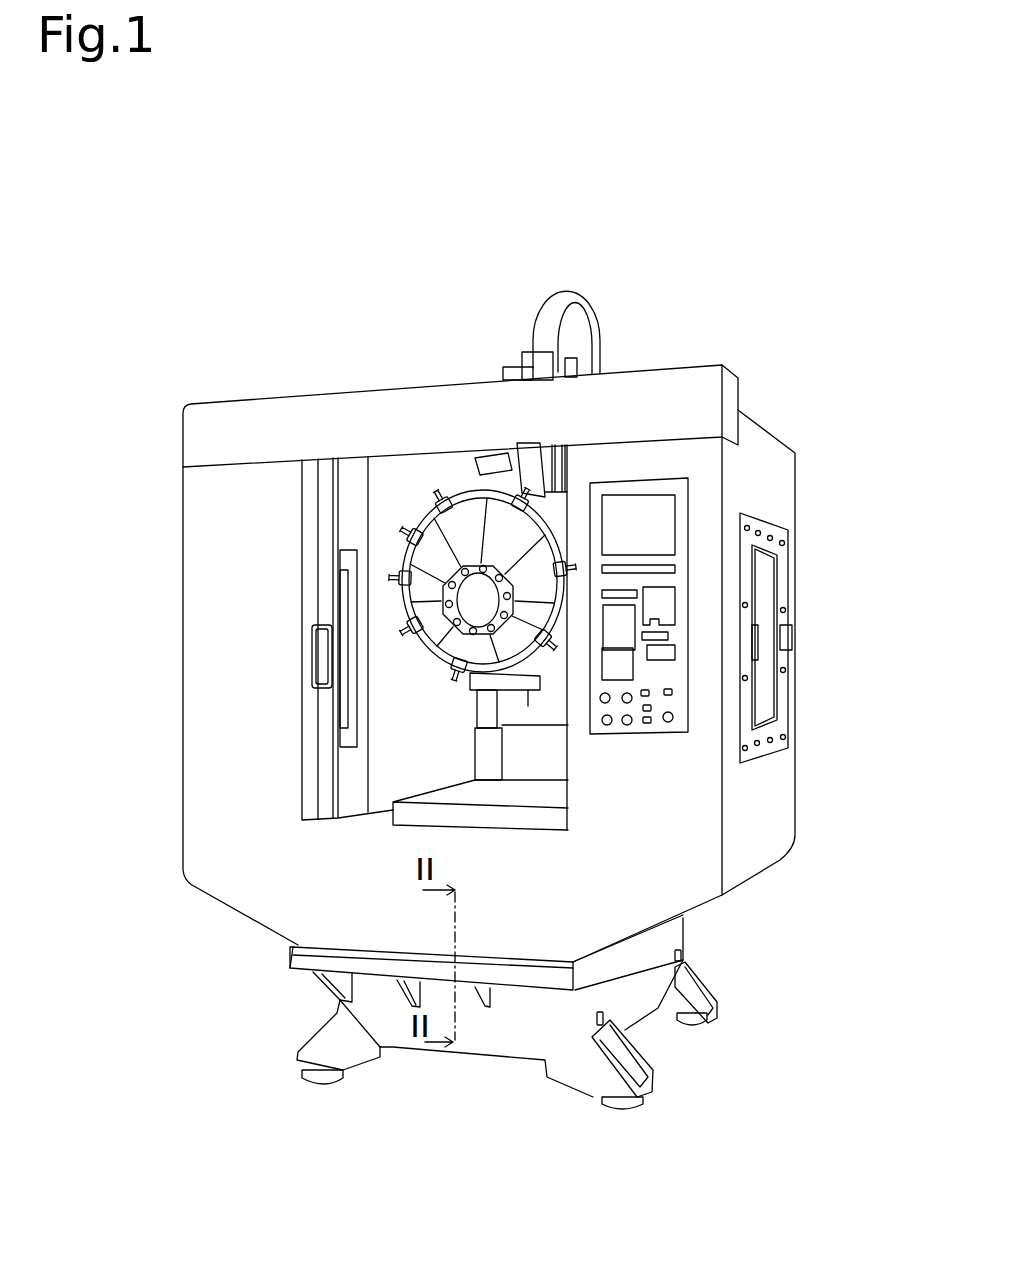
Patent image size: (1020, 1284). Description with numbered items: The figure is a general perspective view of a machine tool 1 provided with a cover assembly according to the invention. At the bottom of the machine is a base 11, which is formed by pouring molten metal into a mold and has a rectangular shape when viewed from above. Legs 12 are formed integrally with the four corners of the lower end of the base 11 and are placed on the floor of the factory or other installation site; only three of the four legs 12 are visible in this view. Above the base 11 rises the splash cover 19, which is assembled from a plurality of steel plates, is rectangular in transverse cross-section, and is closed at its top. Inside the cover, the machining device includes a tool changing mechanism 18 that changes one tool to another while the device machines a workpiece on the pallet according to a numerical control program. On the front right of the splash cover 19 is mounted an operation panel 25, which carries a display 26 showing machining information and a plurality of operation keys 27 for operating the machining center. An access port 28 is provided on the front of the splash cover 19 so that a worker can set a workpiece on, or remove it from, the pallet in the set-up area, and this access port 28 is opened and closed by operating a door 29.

The machine tool 1 is at (641, 197).
The base 11 is at (462, 1053).
The legs 12 is at (297, 1058).
The tool changing mechanism 18 is at (430, 500).
The splash cover 19 is at (185, 742).
The operation panel 25 is at (690, 490).
The display 26 is at (652, 527).
The operation keys 27 is at (627, 726).
The access port 28 is at (568, 750).
The door 29 is at (338, 783).